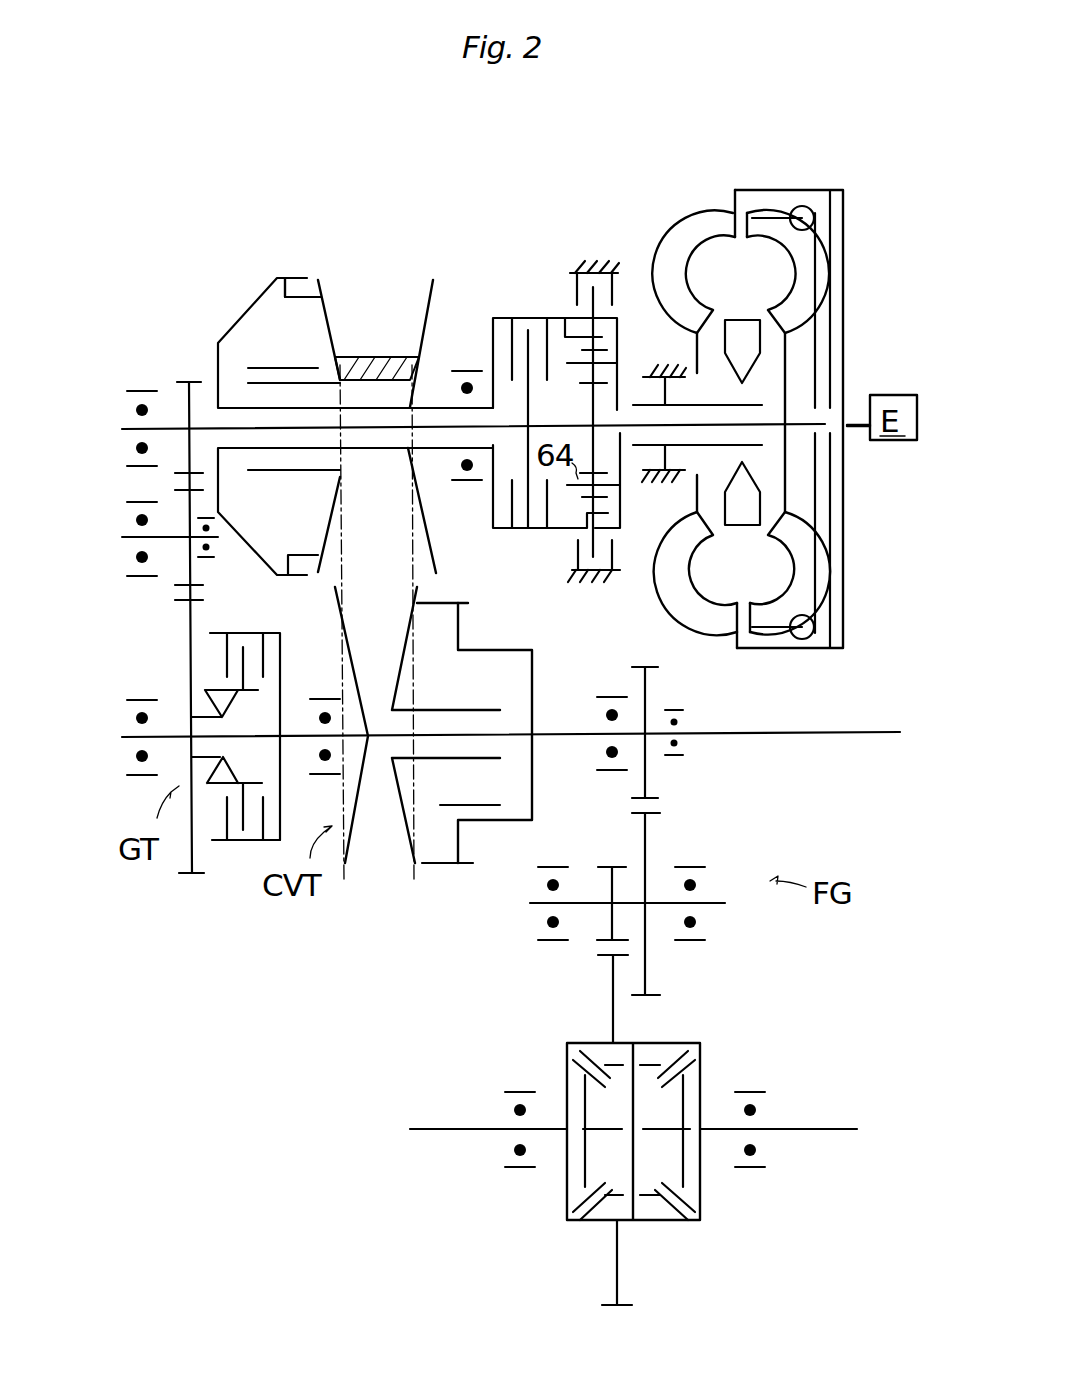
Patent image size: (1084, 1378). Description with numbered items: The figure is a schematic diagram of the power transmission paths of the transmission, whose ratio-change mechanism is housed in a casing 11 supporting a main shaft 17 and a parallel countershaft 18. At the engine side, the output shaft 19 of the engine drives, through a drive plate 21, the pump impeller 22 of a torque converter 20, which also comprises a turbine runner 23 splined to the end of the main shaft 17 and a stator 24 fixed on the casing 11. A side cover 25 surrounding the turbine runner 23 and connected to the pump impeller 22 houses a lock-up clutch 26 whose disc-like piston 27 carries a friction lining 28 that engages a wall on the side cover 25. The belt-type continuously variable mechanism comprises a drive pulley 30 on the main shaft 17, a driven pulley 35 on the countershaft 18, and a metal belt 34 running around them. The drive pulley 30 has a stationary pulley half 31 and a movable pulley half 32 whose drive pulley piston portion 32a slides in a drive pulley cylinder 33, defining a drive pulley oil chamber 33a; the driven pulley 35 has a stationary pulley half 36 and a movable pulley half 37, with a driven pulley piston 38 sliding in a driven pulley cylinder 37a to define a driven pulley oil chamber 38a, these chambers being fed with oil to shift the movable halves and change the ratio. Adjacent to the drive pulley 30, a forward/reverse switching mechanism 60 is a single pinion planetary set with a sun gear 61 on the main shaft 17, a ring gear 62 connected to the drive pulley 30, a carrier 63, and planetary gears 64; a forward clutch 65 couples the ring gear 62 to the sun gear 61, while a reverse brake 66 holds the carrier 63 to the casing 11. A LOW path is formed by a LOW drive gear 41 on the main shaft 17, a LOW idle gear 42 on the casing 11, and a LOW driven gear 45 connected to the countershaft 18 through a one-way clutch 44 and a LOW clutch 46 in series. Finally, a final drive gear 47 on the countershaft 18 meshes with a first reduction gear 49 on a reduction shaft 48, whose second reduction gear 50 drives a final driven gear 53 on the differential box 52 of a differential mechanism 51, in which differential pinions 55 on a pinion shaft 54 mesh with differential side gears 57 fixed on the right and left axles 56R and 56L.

The casing 11 is at (587, 267).
The main shaft 17 is at (362, 431).
The countershaft 18 is at (377, 734).
The output shaft 19 is at (858, 430).
The torque converter 20 is at (771, 393).
The drive plate 21 is at (844, 314).
The pump impeller 22 is at (688, 250).
The turbine runner 23 is at (749, 214).
The stator 24 is at (742, 332).
The side cover 25 is at (832, 276).
The lock-up clutch 26 is at (838, 596).
The piston 27 is at (818, 368).
The friction lining 28 is at (816, 212).
The drive pulley 30 is at (377, 383).
The stationary pulley half 31 is at (426, 286).
The movable pulley half 32 is at (338, 286).
The drive pulley piston portion 32a is at (286, 289).
The drive pulley cylinder 33 is at (222, 336).
The drive pulley oil chamber 33a is at (283, 349).
The metal belt 34 is at (366, 361).
The driven pulley 35 is at (410, 782).
The stationary pulley half 36 is at (351, 868).
The movable pulley half 37 is at (446, 759).
The driven pulley cylinder 37a is at (455, 867).
The driven pulley piston 38 is at (532, 668).
The driven pulley oil chamber 38a is at (470, 787).
The LOW drive gear 41 is at (183, 378).
The LOW idle gear 42 is at (178, 586).
The one-way clutch 44 is at (232, 700).
The LOW driven gear 45 is at (208, 598).
The LOW clutch 46 is at (243, 850).
The final drive gear 47 is at (632, 642).
The reduction shaft 48 is at (577, 910).
The first reduction gear 49 is at (658, 812).
The second reduction gear 50 is at (606, 869).
The differential mechanism 51 is at (647, 1148).
The differential box 52 is at (671, 1222).
The final driven gear 53 is at (600, 955).
The pinion shaft 54 is at (633, 1060).
The differential pinions 55 is at (602, 1062).
The left axle 56L is at (440, 1134).
The right axle 56R is at (838, 1134).
The differential side gears 57 is at (574, 1191).
The forward/reverse switching mechanism 60 is at (538, 304).
The sun gear 61 is at (608, 458).
The ring gear 62 is at (600, 337).
The carrier 63 is at (617, 348).
The planetary gears 64 is at (580, 370).
The forward clutch 65 is at (534, 538).
The reverse brake 66 is at (627, 546).